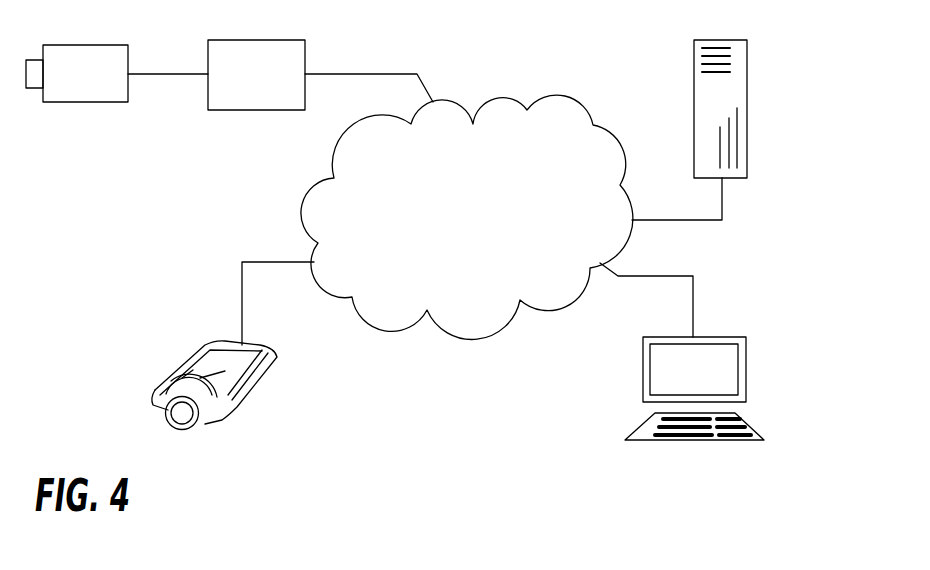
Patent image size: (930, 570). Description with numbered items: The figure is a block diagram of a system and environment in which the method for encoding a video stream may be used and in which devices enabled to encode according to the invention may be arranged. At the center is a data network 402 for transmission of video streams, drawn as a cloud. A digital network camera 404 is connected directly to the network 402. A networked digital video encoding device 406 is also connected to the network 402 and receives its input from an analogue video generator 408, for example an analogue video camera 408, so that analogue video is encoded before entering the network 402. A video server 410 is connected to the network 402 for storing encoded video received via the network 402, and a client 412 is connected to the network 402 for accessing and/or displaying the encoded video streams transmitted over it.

The data network 402 is at (441, 226).
The digital network camera 404 is at (167, 407).
The networked digital video encoding device 406 is at (292, 52).
The analogue video generator 408 is at (97, 80).
The video server 410 is at (737, 87).
The client 412 is at (660, 373).